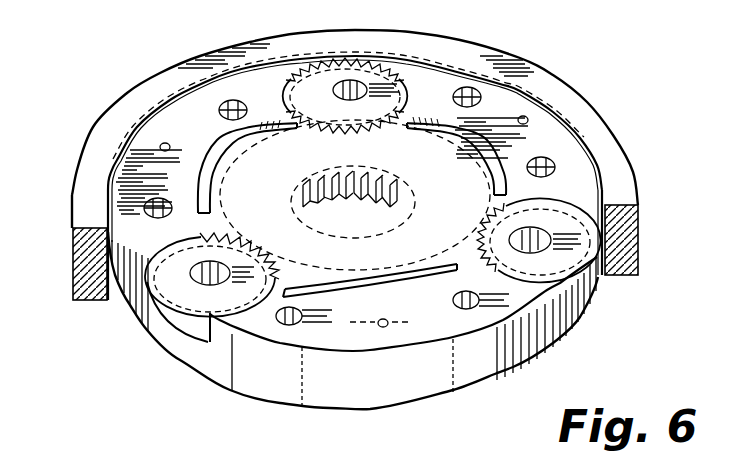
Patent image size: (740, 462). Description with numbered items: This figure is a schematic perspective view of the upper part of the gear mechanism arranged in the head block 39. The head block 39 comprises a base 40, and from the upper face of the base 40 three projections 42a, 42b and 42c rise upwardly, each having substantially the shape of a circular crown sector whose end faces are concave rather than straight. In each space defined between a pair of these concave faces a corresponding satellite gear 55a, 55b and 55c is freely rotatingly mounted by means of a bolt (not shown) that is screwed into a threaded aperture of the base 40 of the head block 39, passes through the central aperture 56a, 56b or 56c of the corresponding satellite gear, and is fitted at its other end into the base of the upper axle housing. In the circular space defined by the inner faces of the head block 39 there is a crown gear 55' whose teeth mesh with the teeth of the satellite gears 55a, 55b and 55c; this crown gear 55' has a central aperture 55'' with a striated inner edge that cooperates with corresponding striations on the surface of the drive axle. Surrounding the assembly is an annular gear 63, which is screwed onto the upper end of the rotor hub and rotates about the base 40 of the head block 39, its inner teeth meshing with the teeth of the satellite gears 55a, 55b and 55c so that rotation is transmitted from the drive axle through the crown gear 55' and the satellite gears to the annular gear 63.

The head block 39 is at (184, 402).
The base 40 is at (547, 336).
The projection 42a is at (110, 188).
The projection 42b is at (372, 340).
The projection 42c is at (575, 166).
The crown gear 55' is at (373, 165).
The central aperture 55'' is at (363, 205).
The satellite gear 55a is at (196, 305).
The satellite gear 55b is at (572, 265).
The satellite gear 55c is at (382, 78).
The central aperture 56a is at (192, 272).
The central aperture 56b is at (548, 231).
The central aperture 56c is at (315, 60).
The annular gear 63 is at (590, 113).